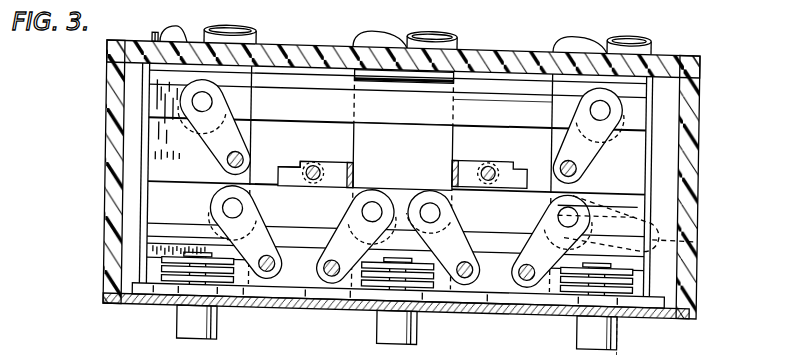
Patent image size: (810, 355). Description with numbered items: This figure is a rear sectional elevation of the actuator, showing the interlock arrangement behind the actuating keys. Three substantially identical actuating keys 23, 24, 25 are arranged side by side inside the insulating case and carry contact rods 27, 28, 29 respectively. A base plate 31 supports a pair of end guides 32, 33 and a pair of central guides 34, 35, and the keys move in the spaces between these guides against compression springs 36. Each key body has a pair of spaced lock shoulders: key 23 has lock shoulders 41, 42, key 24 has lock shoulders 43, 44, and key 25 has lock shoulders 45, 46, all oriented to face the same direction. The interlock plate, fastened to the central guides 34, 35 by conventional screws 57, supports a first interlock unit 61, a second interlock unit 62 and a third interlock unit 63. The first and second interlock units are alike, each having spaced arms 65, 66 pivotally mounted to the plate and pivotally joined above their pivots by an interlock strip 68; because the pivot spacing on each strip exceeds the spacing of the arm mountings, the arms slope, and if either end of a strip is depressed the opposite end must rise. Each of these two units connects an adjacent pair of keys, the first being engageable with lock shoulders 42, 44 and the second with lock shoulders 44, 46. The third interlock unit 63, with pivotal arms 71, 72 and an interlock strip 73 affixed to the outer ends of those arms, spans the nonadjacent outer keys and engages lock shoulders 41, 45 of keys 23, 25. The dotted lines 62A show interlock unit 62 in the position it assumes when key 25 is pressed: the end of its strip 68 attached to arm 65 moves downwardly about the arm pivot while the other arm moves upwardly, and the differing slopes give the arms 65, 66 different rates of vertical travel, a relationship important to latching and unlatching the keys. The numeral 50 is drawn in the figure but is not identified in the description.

The actuating key 23 is at (169, 114).
The actuating key 24 is at (441, 79).
The actuating key 25 is at (634, 99).
The contact rod 27 is at (221, 319).
The contact rod 28 is at (381, 321).
The contact rod 29 is at (617, 316).
The base plate 31 is at (136, 302).
The end guide 32 is at (665, 167).
The end guide 33 is at (135, 179).
The central guide 34 is at (510, 138).
The central guide 35 is at (304, 141).
The compression spring 36 is at (639, 276).
The lock shoulder 41 is at (548, 88).
The lock shoulder 42 is at (640, 181).
The lock shoulder 43 is at (401, 92).
The lock shoulder 44 is at (405, 172).
The lock shoulder 45 is at (243, 80).
The lock shoulder 46 is at (175, 193).
The stepped piece 50 is at (300, 162).
The screw 57 is at (315, 159).
The first interlock unit 61 is at (283, 229).
The second interlock unit 62 is at (521, 233).
The dotted-line position of interlock unit 62A is at (700, 226).
The third interlock unit 63 is at (474, 100).
The arm 65 is at (337, 276).
The arm 66 is at (190, 233).
The interlock strip 68 is at (314, 215).
The arm 71 is at (208, 135).
The arm 72 is at (597, 134).
The interlock strip 73 is at (301, 95).